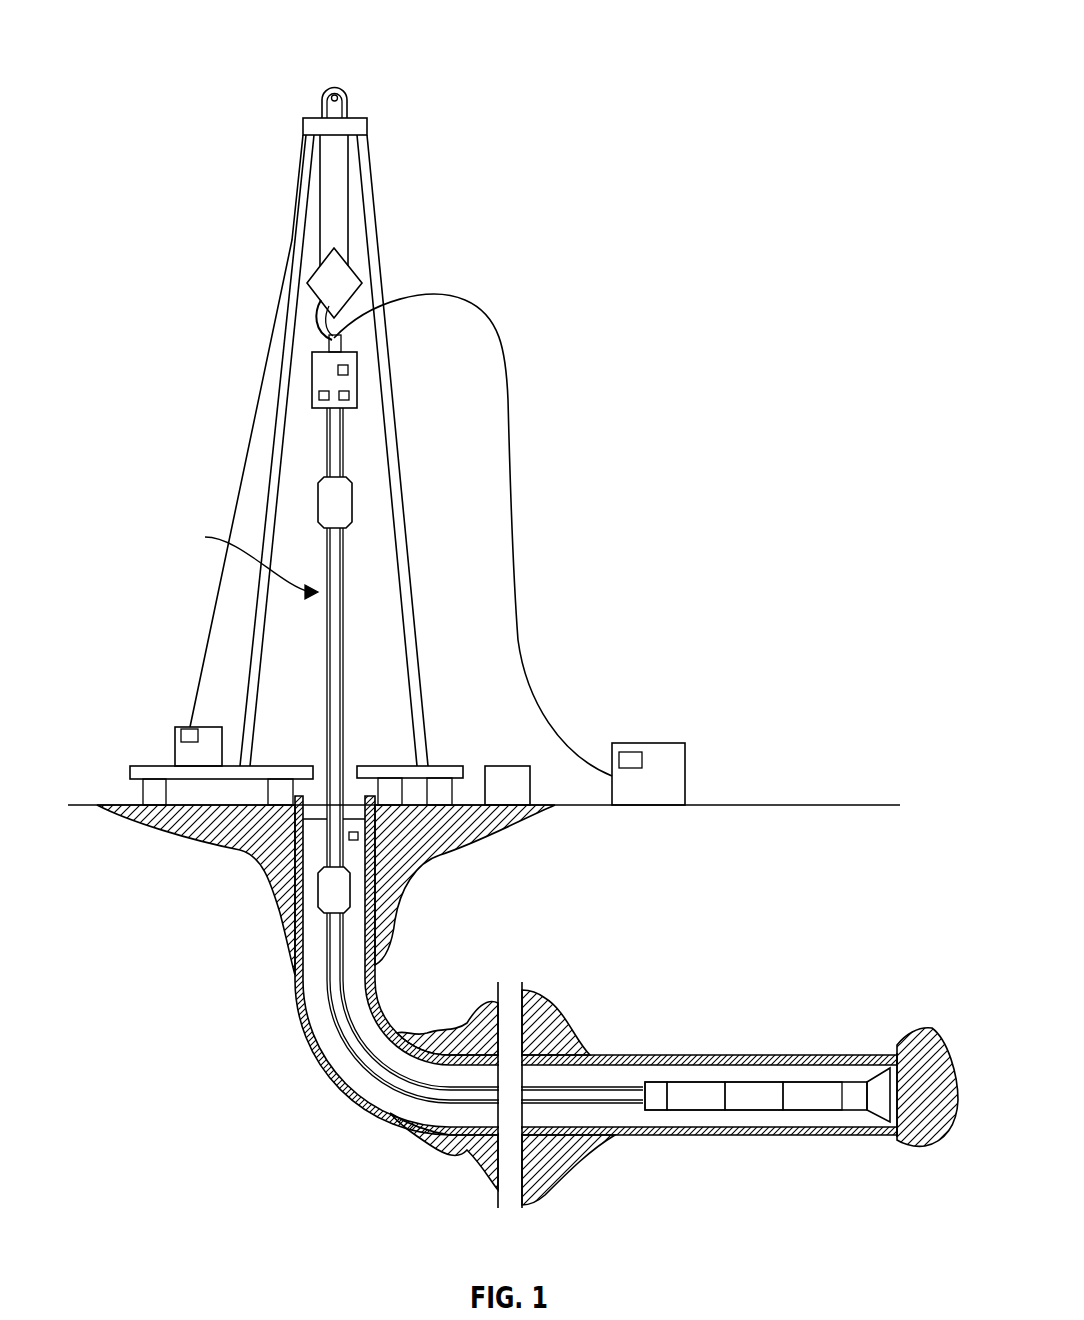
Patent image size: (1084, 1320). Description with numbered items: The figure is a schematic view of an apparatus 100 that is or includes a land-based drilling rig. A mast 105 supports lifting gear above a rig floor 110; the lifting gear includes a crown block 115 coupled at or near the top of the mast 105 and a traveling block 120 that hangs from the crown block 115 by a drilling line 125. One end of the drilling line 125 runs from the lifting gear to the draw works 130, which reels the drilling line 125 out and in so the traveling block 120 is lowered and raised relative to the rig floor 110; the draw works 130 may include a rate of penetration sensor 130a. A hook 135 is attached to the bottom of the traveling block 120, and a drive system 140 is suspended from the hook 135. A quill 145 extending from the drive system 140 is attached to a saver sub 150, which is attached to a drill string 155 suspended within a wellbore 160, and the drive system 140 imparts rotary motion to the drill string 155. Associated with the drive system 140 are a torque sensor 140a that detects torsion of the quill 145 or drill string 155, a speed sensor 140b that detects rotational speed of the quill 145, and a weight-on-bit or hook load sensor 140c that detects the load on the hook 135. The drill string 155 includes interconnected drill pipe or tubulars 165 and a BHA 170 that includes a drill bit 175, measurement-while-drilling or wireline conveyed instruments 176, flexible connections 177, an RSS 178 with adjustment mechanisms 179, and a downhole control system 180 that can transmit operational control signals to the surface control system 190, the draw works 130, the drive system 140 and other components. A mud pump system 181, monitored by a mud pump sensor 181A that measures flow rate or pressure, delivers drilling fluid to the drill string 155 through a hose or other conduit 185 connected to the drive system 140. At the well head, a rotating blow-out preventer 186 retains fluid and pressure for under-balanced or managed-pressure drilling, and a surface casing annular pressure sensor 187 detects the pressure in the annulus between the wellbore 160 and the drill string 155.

The apparatus 100 is at (636, 26).
The mast 105 is at (370, 188).
The rig floor 110 is at (130, 770).
The crown block 115 is at (335, 88).
The traveling block 120 is at (356, 290).
The drilling line 125 is at (320, 186).
The draw works 130 is at (175, 758).
The rate of penetration sensor 130a is at (180, 733).
The hook 135 is at (316, 327).
The drive system 140 is at (312, 360).
The torque sensor 140a is at (318, 396).
The speed sensor 140b is at (350, 370).
The weight-on-bit or hook load sensor 140c is at (350, 396).
The quill 145 is at (326, 438).
The saver sub 150 is at (316, 500).
The drill string 155 is at (238, 561).
The wellbore 160 is at (325, 1022).
The drill pipe or tubulars 165 is at (327, 744).
The bottom hole assembly 170 is at (867, 1080).
The drill bit 175 is at (915, 1032).
The measurement-while-drilling or wireline conveyed instruments 176 is at (694, 1074).
The flexible connections 177 is at (763, 1092).
The rotary steerable system 178 is at (850, 1074).
The adjustment mechanisms 179 is at (858, 1106).
The downhole control system 180 is at (640, 1090).
The mud pump system 181 is at (678, 743).
The mud pump sensor 181A is at (628, 752).
The hose or other conduit 185 is at (513, 520).
The rotating blow-out preventer 186 is at (312, 812).
The surface casing annular pressure sensor 187 is at (362, 836).
The surface control system 190 is at (503, 766).